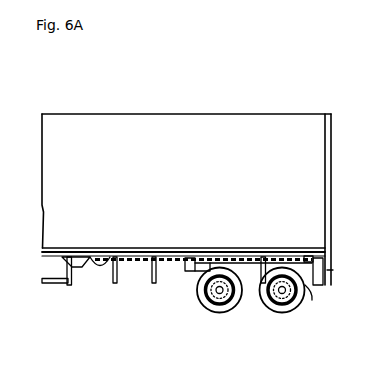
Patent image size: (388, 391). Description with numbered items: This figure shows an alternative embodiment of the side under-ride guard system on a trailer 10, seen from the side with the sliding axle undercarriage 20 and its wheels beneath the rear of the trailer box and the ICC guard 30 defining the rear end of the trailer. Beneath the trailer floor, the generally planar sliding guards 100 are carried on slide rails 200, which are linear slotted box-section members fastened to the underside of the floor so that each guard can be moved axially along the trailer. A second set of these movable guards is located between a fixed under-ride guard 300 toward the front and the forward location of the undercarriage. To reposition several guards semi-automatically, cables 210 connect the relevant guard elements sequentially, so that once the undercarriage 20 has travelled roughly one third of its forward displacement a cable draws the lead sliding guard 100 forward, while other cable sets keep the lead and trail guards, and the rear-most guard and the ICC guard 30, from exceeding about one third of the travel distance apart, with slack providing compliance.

The trailer 10 is at (289, 125).
The sliding axle undercarriage 20 is at (193, 278).
The ICC guard 30 is at (325, 272).
The sliding guard 100 is at (113, 287).
The slide rail 200 is at (257, 287).
The cable 210 is at (90, 272).
The fixed under-ride guard 300 is at (53, 288).